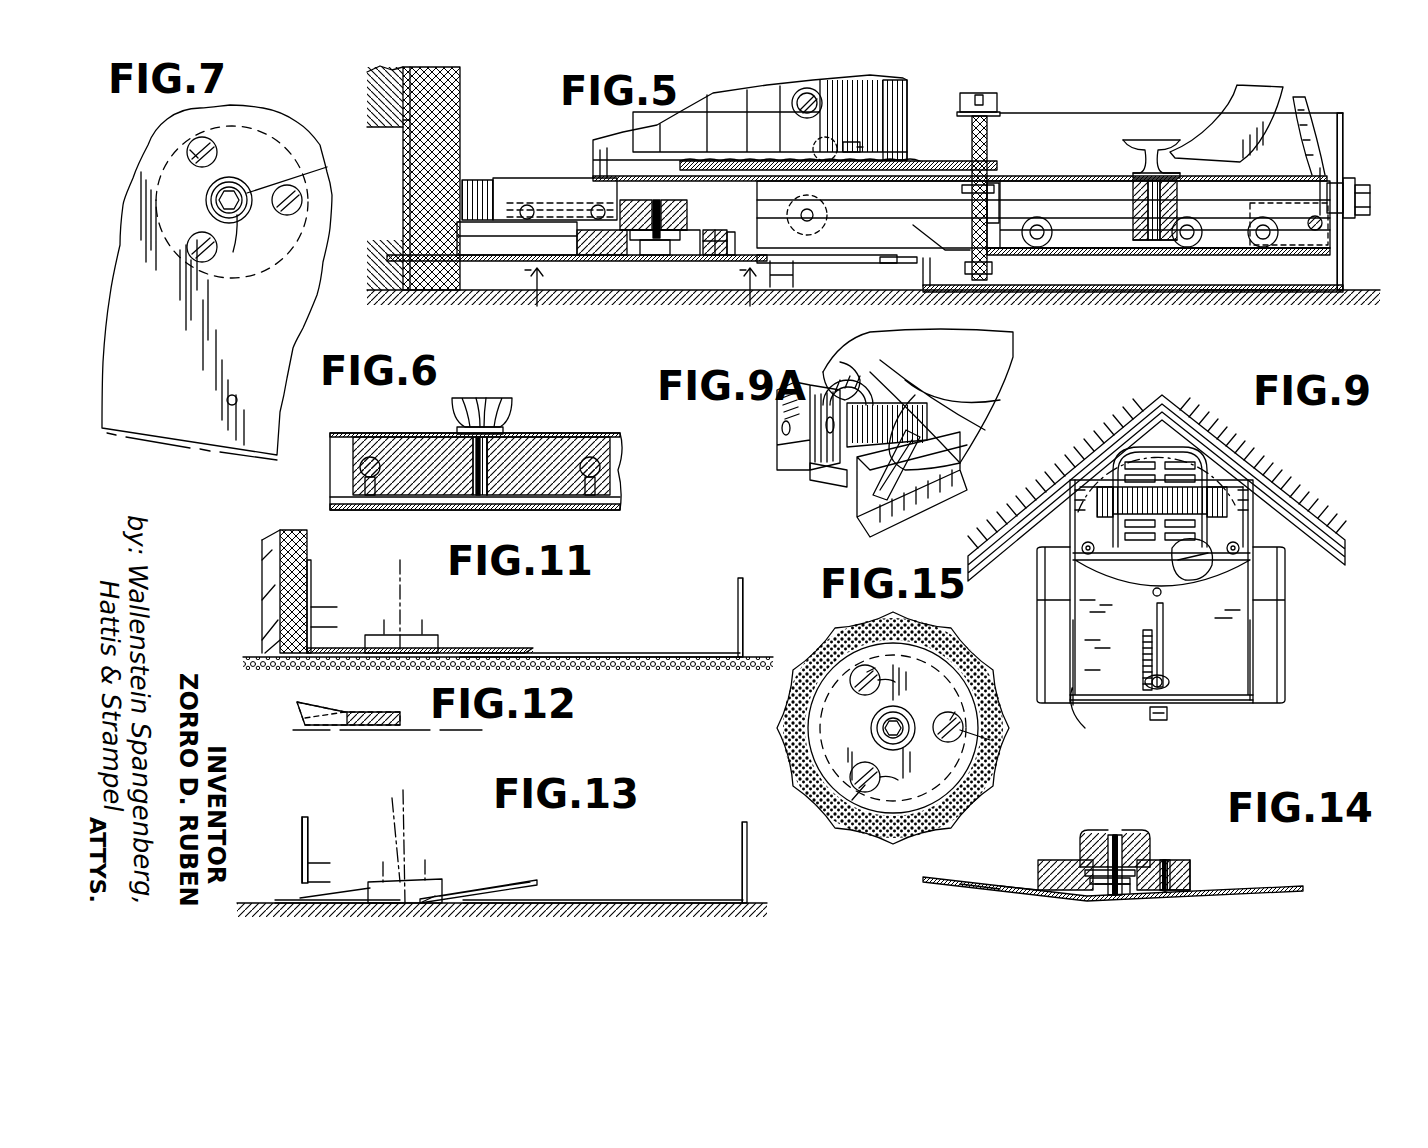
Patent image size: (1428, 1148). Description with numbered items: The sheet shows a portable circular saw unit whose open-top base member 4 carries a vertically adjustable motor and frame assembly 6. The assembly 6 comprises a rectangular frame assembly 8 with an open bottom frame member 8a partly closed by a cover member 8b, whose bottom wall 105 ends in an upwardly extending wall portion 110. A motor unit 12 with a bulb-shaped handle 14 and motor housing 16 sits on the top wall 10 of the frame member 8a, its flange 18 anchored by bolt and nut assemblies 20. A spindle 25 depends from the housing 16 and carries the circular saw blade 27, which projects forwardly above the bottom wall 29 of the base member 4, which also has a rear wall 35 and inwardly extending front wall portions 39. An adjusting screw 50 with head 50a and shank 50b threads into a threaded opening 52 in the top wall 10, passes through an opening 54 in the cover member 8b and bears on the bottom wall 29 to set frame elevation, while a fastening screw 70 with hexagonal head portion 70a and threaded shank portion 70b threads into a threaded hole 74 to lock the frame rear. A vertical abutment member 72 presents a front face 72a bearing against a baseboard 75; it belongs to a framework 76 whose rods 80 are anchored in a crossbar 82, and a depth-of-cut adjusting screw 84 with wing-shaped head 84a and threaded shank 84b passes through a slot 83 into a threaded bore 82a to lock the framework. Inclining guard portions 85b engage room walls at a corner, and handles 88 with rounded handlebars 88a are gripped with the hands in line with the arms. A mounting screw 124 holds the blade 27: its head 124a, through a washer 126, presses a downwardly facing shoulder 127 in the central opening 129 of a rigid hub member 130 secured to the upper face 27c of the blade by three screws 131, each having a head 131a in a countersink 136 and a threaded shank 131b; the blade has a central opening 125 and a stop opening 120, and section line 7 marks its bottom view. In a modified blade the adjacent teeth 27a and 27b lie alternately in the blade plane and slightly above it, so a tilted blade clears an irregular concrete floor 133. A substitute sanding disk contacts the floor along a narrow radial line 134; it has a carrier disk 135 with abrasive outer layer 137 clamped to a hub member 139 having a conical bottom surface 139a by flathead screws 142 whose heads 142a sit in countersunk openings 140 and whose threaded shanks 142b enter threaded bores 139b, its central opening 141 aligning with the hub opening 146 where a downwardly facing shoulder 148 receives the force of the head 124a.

In FIG. 9A, the base member 4 is at (978, 481).
In FIG. 11, the base member 4 is at (754, 614).
In FIG. 13, the base member 4 is at (760, 864).
In FIG. 9, the motor and frame assembly 6 is at (1233, 716).
In FIG. 13, the motor and frame assembly 6 is at (287, 833).
In FIG. 5, the section line 7 is at (644, 297).
In FIG. 5, the rectangular frame assembly 8 is at (1012, 170).
In FIG. 5, the frame member 8a is at (1030, 176).
In FIG. 9, the frame member 8a is at (1240, 694).
In FIG. 5, the cover member 8b is at (1095, 262).
In FIG. 5, the top wall 10 is at (940, 162).
In FIG. 6, the top wall 10 is at (595, 432).
In FIG. 5, the motor unit 12 is at (914, 96).
In FIG. 9A, the motor unit 12 is at (771, 446).
In FIG. 9, the motor unit 12 is at (1096, 501).
In FIG. 9, the bulb-shaped handle 14 is at (1172, 568).
In FIG. 5, the motor housing 16 is at (840, 90).
In FIG. 9, the flange 18 is at (1237, 510).
In FIG. 5, the bolt and nut assemblies 20 is at (860, 147).
In FIG. 9, the bolt and nut assemblies 20 is at (1088, 556).
In FIG. 5, the spindle 25 is at (612, 204).
In FIG. 11, the spindle 25 is at (418, 634).
In FIG. 13, the spindle 25 is at (385, 880).
In FIG. 14, the spindle 25 is at (1122, 840).
In FIG. 7, the circular saw blade 27 is at (128, 228).
In FIG. 5, the circular saw blade 27 is at (458, 260).
In FIG. 9, the circular saw blade 27 is at (1125, 410).
In FIG. 11, the circular saw blade 27 is at (498, 639).
In FIG. 12, the circular saw blade 27 is at (372, 726).
In FIG. 15, the circular saw blade 27 is at (893, 728).
In FIG. 14, the circular saw blade 27 is at (961, 869).
In FIG. 12, the saw tooth 27a is at (298, 722).
In FIG. 13, the saw tooth 27a is at (478, 903).
In FIG. 12, the saw tooth 27b is at (315, 712).
In FIG. 13, the saw tooth 27b is at (489, 876).
In FIG. 5, the upper face of the saw blade 27c is at (520, 255).
In FIG. 5, the bottom wall 29 is at (1238, 293).
In FIG. 5, the rear wall 35 is at (1345, 280).
In FIG. 5, the front wall portion 39 is at (1345, 113).
In FIG. 5, the adjusting screw 50 is at (985, 93).
In FIG. 9, the adjusting screw 50 is at (1153, 596).
In FIG. 5, the head 50a is at (990, 97).
In FIG. 5, the shank 50b is at (962, 190).
In FIG. 5, the threaded opening 52 is at (994, 193).
In FIG. 5, the opening 54 is at (992, 270).
In FIG. 5, the fastening screw 70 is at (1372, 200).
In FIG. 9, the fastening screw 70 is at (1158, 721).
In FIG. 5, the hexagonal head portion 70a is at (1373, 192).
In FIG. 5, the threaded shank portion 70b is at (1322, 197).
In FIG. 5, the abutment member 72 is at (460, 97).
In FIG. 9, the abutment member 72 is at (1172, 430).
In FIG. 11, the abutment member 72 is at (280, 553).
In FIG. 13, the abutment member 72 is at (310, 825).
In FIG. 5, the front face 72a is at (405, 125).
In FIG. 5, the threaded hole 74 is at (1329, 180).
In FIG. 9, the threaded hole 74 is at (1073, 500).
In FIG. 5, the baseboard 75 is at (403, 98).
In FIG. 11, the baseboard 75 is at (280, 578).
In FIG. 5, the framework 76 is at (540, 175).
In FIG. 11, the framework 76 is at (320, 583).
In FIG. 5, the rod 80 is at (1065, 217).
In FIG. 6, the rod 80 is at (360, 467).
In FIG. 5, the crossbar 82 is at (1178, 197).
In FIG. 6, the crossbar 82 is at (424, 437).
In FIG. 5, the threaded bore 82a is at (1158, 243).
In FIG. 6, the threaded bore 82a is at (513, 437).
In FIG. 9, the slot 83 is at (1164, 632).
In FIG. 5, the depth-of-cut adjusting screw 84 is at (1157, 132).
In FIG. 6, the depth-of-cut adjusting screw 84 is at (472, 390).
In FIG. 9, the depth-of-cut adjusting screw 84 is at (1165, 683).
In FIG. 5, the wing-shaped head 84a is at (1132, 140).
In FIG. 6, the wing-shaped head 84a is at (488, 396).
In FIG. 5, the threaded shank 84b is at (1162, 186).
In FIG. 6, the threaded shank 84b is at (490, 467).
In FIG. 9, the rearwardly and outwardly inclining portion 85b is at (1100, 492).
In FIG. 9A, the handle 88 is at (911, 426).
In FIG. 9, the handle 88 is at (1082, 658).
In FIG. 9, the handlebar 88a is at (1050, 630).
In FIG. 5, the bottom wall 105 is at (1182, 262).
In FIG. 5, the upwardly extending wall portion 110 is at (926, 258).
In FIG. 7, the opening 120 is at (227, 400).
In FIG. 7, the mounting screw 124 is at (233, 186).
In FIG. 5, the mounting screw 124 is at (642, 258).
In FIG. 15, the mounting screw 124 is at (876, 732).
In FIG. 14, the mounting screw 124 is at (1110, 895).
In FIG. 7, the head 124a is at (252, 242).
In FIG. 5, the head 124a is at (657, 258).
In FIG. 14, the head 124a is at (1120, 888).
In FIG. 7, the central opening 125 is at (306, 174).
In FIG. 5, the washer 126 is at (640, 243).
In FIG. 5, the annular shoulder 127 is at (652, 200).
In FIG. 5, the central opening 129 is at (673, 258).
In FIG. 7, the hub member 130 is at (288, 146).
In FIG. 5, the hub member 130 is at (575, 272).
In FIG. 7, the screws 131 is at (190, 145).
In FIG. 5, the screws 131 is at (712, 258).
In FIG. 7, the head 131a is at (190, 247).
In FIG. 5, the head 131a is at (725, 258).
In FIG. 5, the threaded shank 131b is at (735, 236).
In FIG. 11, the concrete floor 133 is at (585, 657).
In FIG. 13, the concrete floor 133 is at (568, 903).
In FIG. 13, the radial line 134 is at (332, 900).
In FIG. 14, the carrier disk 135 is at (978, 880).
In FIG. 5, the countersink 136 is at (718, 258).
In FIG. 14, the outer layer 137 is at (1005, 895).
In FIG. 14, the hub member 139 is at (1052, 860).
In FIG. 14, the conically shaped bottom surface 139a is at (1178, 892).
In FIG. 14, the threaded bores 139b is at (1192, 871).
In FIG. 15, the countersunk openings 140 is at (958, 731).
In FIG. 14, the countersunk openings 140 is at (1175, 857).
In FIG. 14, the central opening 141 is at (1133, 893).
In FIG. 15, the flathead screws 142 is at (877, 667).
In FIG. 15, the heads 142a is at (860, 665).
In FIG. 14, the heads 142a is at (1165, 893).
In FIG. 14, the threaded shanks 142b is at (1167, 860).
In FIG. 14, the central opening 146 is at (1090, 878).
In FIG. 14, the shoulder 148 is at (1088, 843).